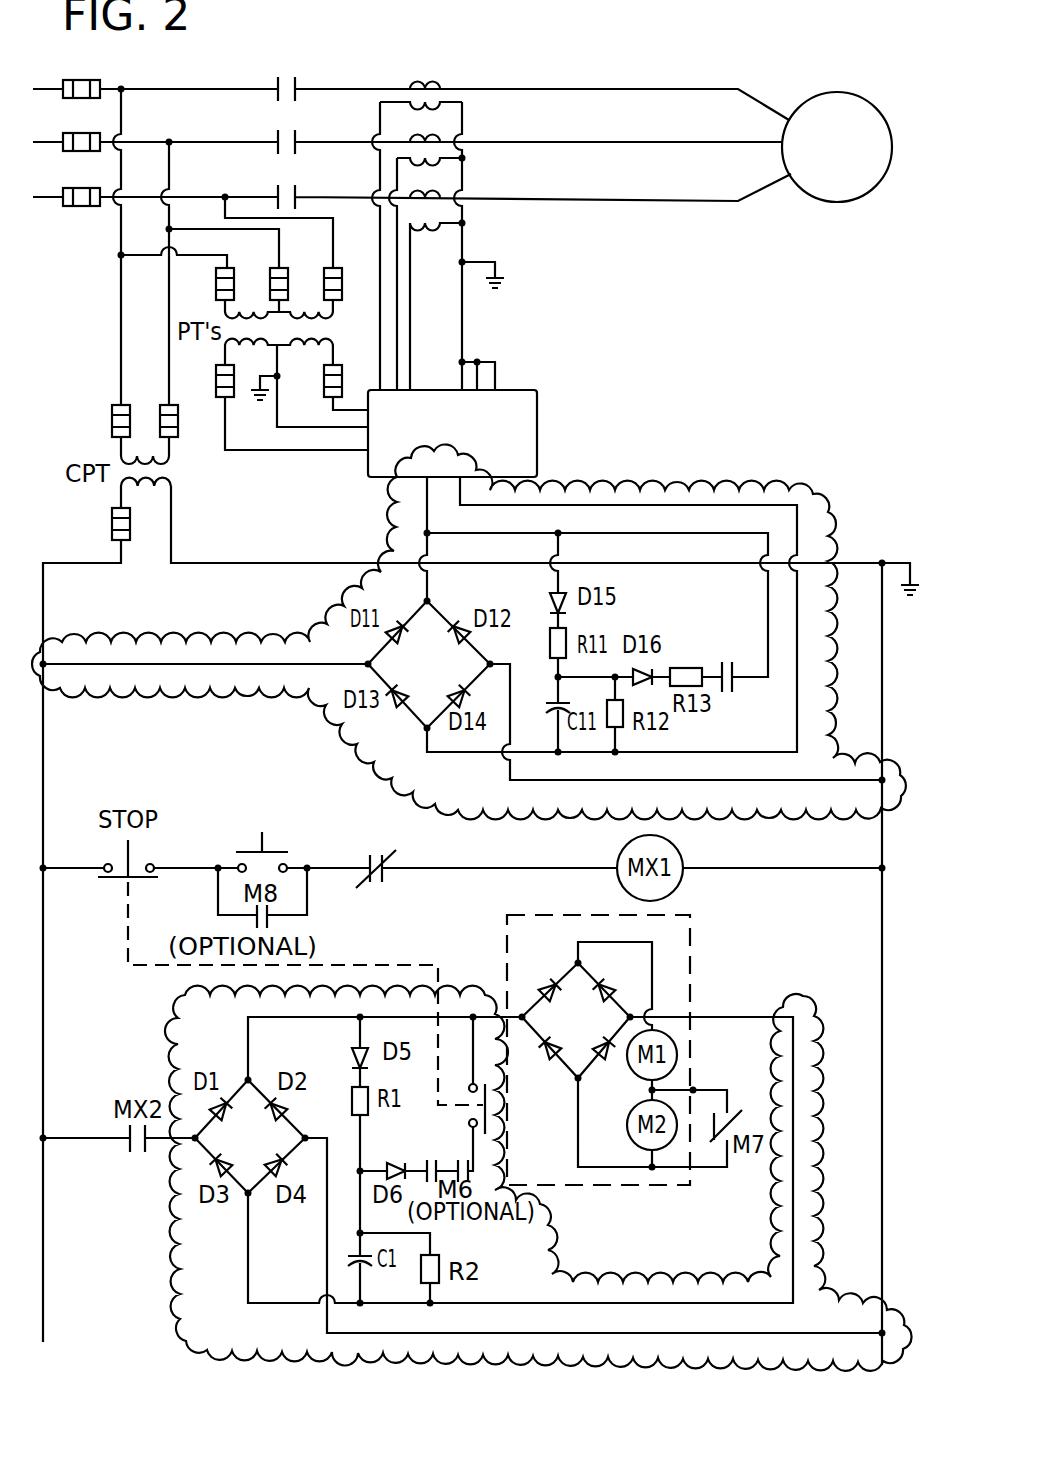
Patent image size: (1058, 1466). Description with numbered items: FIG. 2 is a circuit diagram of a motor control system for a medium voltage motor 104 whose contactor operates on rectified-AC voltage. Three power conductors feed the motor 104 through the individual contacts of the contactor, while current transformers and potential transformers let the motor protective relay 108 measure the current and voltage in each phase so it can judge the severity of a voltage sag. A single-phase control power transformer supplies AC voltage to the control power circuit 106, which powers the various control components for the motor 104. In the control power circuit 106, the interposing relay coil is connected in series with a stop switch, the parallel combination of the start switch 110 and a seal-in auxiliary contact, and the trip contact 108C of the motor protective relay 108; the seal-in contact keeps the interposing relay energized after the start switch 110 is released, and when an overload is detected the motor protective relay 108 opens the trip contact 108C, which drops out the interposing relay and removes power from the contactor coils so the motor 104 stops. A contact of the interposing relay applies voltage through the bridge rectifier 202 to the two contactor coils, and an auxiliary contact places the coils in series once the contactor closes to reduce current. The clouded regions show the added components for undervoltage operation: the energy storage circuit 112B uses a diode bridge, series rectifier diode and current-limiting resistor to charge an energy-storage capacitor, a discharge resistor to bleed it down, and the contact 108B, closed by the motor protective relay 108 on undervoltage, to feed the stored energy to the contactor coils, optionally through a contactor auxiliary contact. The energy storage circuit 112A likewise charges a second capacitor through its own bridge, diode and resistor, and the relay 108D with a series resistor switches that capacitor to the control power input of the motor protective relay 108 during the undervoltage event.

The motor 104 is at (848, 93).
The control power circuit 106 is at (683, 366).
The motor protective relay 108 is at (452, 433).
The contact 108B is at (426, 1148).
The trip contact 108C is at (370, 847).
The relay 108D is at (727, 650).
The start switch 110 is at (263, 816).
The energy storage circuit 112A is at (803, 480).
The energy storage circuit 112B is at (168, 1235).
The bridge rectifier 202 is at (576, 1021).